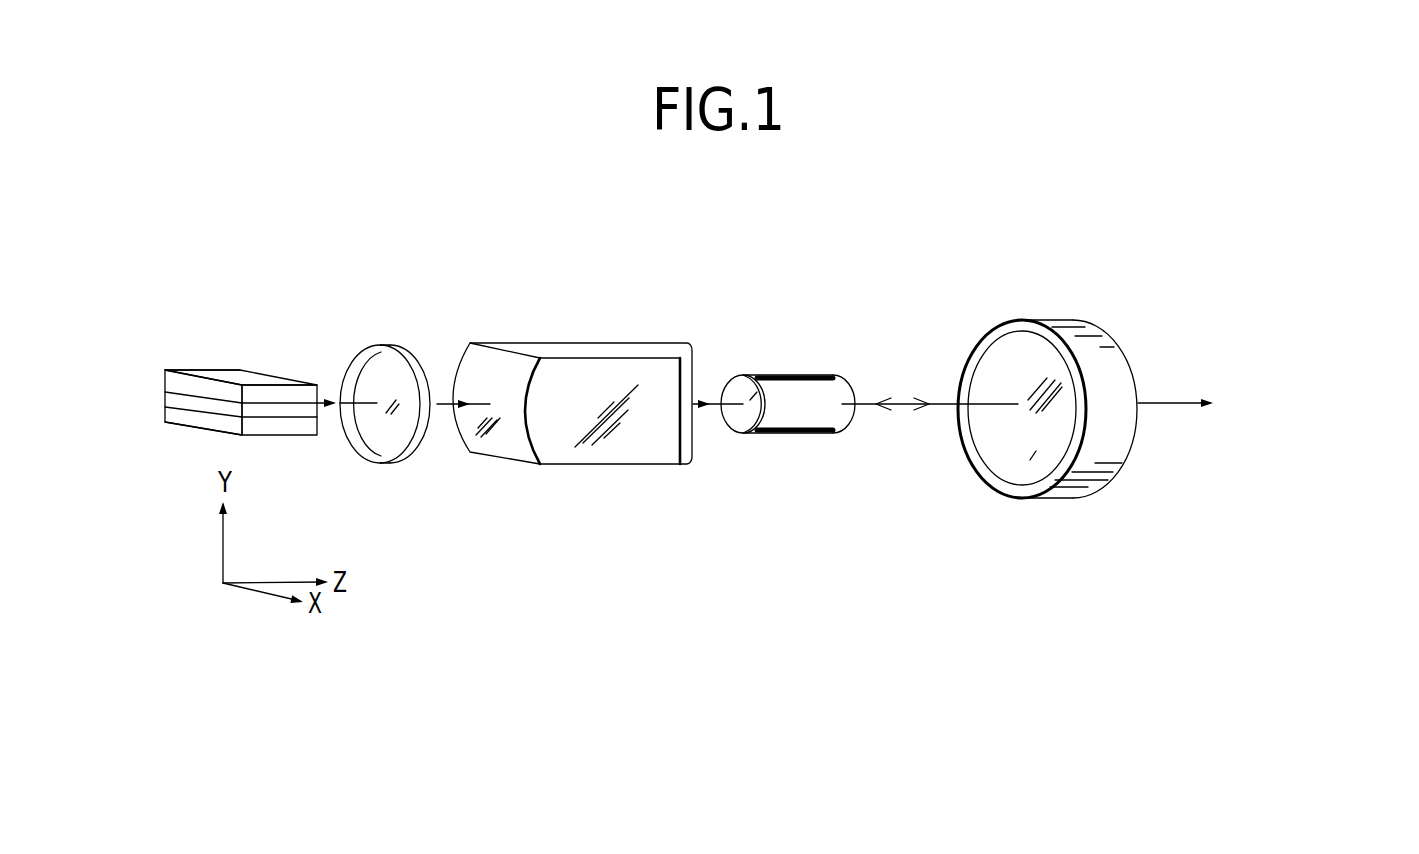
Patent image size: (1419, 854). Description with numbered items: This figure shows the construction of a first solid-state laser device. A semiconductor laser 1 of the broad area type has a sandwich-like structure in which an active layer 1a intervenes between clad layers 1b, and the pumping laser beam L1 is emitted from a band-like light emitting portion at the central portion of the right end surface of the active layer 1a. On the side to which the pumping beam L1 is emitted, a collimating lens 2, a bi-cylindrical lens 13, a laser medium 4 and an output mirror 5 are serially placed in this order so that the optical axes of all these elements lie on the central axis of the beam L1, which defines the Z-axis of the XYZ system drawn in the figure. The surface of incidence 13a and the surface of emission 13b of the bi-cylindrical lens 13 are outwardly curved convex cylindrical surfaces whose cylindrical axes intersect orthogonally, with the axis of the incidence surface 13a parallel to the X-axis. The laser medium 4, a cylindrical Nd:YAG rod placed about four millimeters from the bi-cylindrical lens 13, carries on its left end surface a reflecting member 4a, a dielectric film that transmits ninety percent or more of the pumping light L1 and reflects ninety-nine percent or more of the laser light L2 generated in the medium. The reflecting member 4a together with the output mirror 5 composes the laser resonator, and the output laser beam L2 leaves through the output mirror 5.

The semiconductor laser 1 is at (222, 357).
The active layer 1a is at (170, 400).
The clad layers 1b is at (175, 383).
The collimating lens 2 is at (408, 347).
The bi-cylindrical lens 13 is at (590, 403).
The surface of incidence 13a is at (525, 452).
The surface of emission 13b is at (687, 443).
The laser medium 4 is at (835, 400).
The reflecting member 4a is at (750, 420).
The output mirror 5 is at (1082, 322).
The pumping laser beam L1 is at (340, 405).
The output laser beam L2 is at (1271, 393).